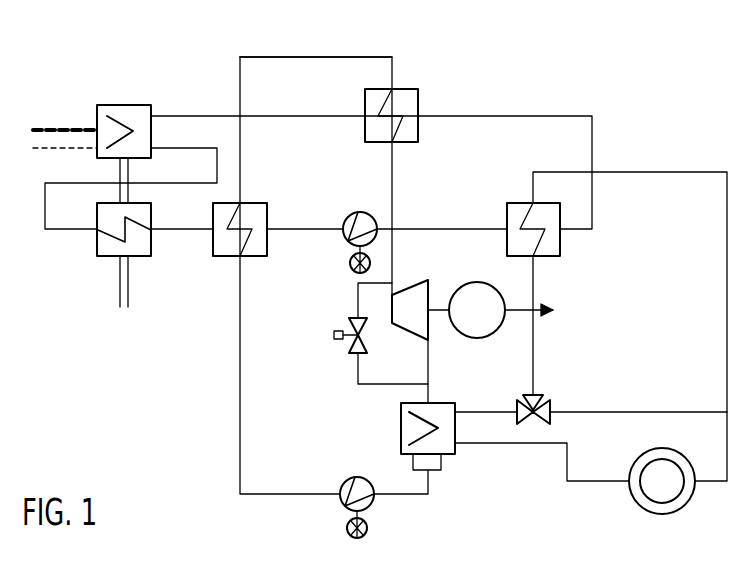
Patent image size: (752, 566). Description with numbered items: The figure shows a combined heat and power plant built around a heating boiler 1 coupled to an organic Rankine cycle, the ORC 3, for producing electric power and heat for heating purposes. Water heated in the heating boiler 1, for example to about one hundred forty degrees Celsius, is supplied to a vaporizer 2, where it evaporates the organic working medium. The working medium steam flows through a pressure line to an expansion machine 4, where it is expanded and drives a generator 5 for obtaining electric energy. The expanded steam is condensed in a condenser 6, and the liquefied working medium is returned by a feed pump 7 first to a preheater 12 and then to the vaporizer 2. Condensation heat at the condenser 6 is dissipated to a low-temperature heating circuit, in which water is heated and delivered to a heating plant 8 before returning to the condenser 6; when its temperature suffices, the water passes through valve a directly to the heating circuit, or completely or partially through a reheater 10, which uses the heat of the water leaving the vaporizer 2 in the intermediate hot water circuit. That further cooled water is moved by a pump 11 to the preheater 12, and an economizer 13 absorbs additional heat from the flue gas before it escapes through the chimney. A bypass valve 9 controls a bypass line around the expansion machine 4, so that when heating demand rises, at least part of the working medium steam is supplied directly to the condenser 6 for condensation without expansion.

The heating boiler 1 is at (140, 105).
The vaporizer 2 is at (413, 89).
The ORC 3 is at (292, 57).
The expansion machine 4 is at (411, 288).
The generator 5 is at (497, 333).
The condenser 6 is at (450, 455).
The feed pump 7 is at (341, 505).
The heating plant 8 is at (685, 505).
The bypass valve 9 is at (367, 342).
The reheater 10 is at (560, 245).
The pump 11 is at (351, 212).
The preheater 12 is at (258, 257).
The economizer 13 is at (106, 257).
The valve a is at (550, 396).